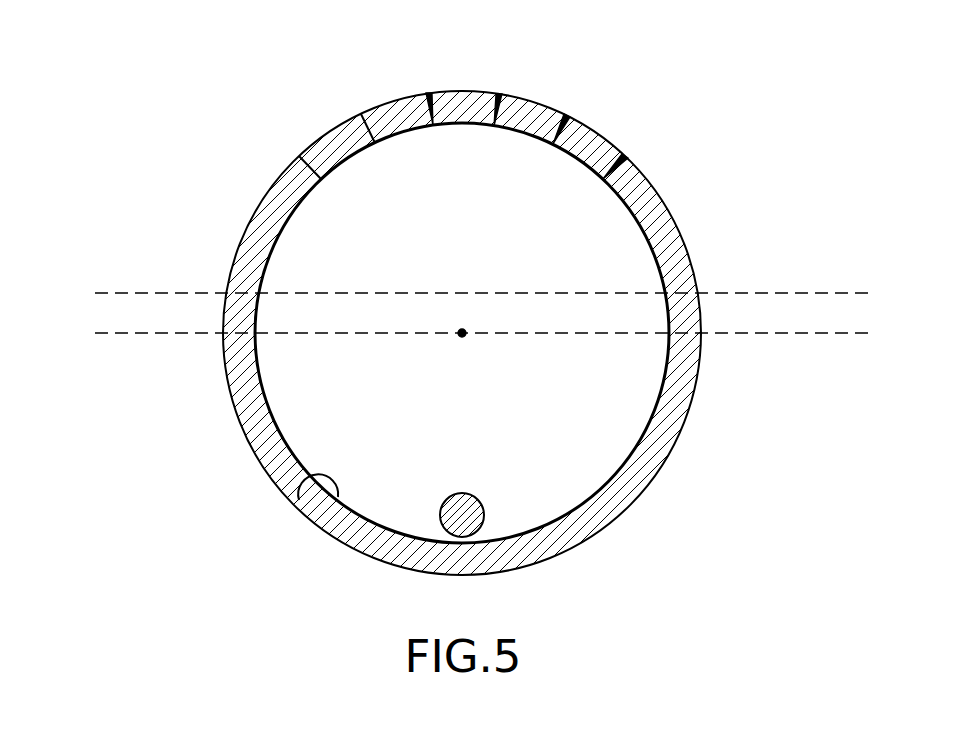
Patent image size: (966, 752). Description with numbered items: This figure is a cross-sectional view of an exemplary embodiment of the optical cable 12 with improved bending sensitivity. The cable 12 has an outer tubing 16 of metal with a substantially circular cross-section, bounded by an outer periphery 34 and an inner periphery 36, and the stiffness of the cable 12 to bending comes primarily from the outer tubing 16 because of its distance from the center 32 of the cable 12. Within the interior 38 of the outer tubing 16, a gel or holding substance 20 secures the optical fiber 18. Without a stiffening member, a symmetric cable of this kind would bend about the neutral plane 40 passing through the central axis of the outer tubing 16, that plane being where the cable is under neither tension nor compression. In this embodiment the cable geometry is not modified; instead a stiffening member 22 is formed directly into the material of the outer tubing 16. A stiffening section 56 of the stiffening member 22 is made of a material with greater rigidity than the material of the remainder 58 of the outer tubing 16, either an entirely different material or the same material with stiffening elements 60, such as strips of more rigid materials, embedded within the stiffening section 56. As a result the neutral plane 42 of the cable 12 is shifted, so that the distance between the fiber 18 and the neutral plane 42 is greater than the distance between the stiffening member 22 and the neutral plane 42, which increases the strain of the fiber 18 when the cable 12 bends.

The optical cable 12 is at (205, 160).
The outer tubing 16 is at (270, 458).
The optical fiber 18 is at (495, 514).
The holding substance 20 is at (623, 420).
The stiffening member 22 is at (373, 107).
The center 32 is at (458, 333).
The outer periphery 34 is at (228, 392).
The inner periphery 36 is at (298, 496).
The interior 38 is at (457, 455).
The neutral plane 40 is at (862, 333).
The neutral plane 42 is at (862, 293).
The stiffening section 56 is at (517, 107).
The remainder 58 is at (610, 498).
The stiffening elements 60 is at (428, 108).